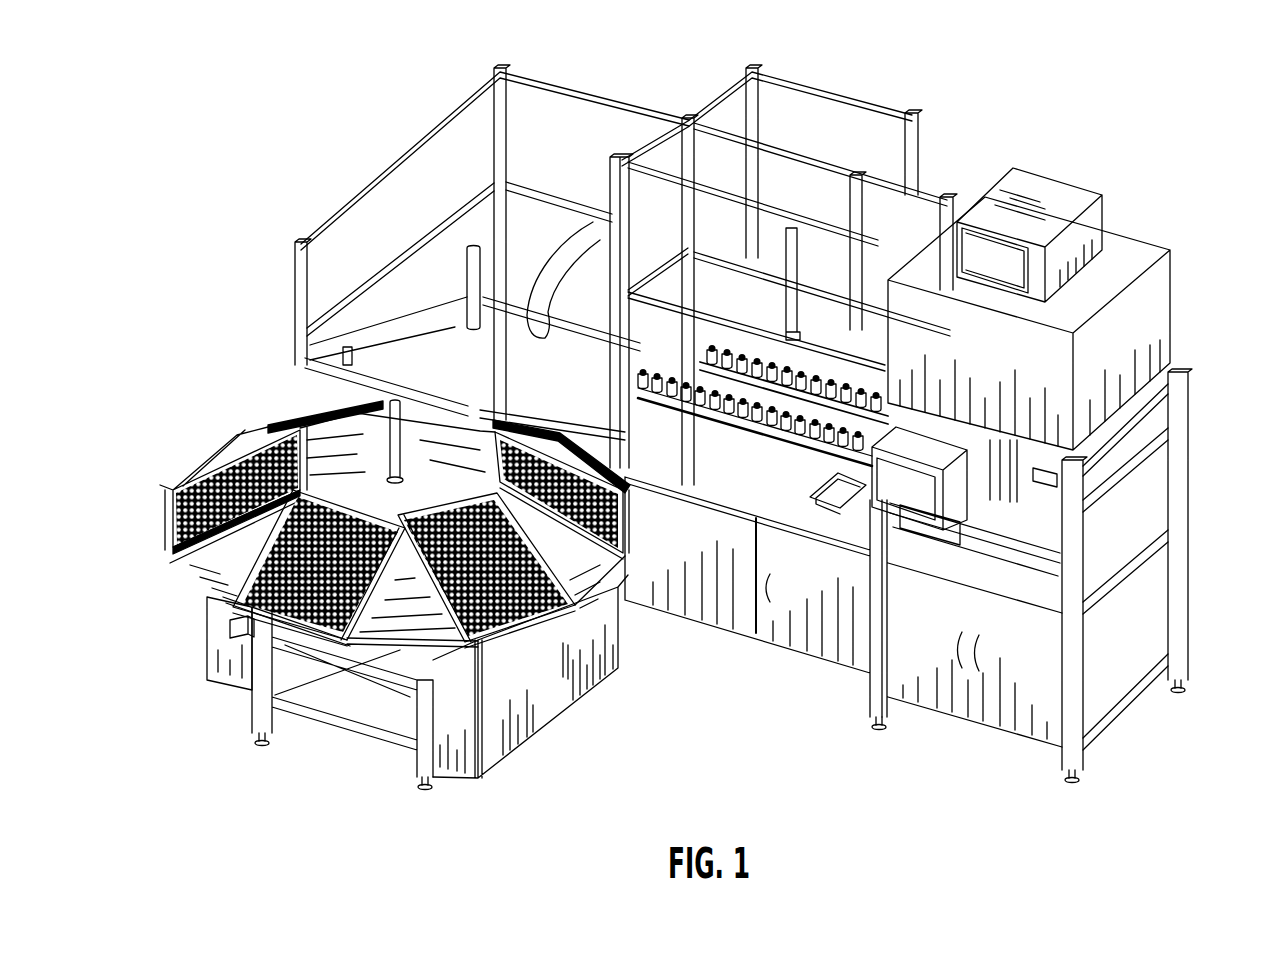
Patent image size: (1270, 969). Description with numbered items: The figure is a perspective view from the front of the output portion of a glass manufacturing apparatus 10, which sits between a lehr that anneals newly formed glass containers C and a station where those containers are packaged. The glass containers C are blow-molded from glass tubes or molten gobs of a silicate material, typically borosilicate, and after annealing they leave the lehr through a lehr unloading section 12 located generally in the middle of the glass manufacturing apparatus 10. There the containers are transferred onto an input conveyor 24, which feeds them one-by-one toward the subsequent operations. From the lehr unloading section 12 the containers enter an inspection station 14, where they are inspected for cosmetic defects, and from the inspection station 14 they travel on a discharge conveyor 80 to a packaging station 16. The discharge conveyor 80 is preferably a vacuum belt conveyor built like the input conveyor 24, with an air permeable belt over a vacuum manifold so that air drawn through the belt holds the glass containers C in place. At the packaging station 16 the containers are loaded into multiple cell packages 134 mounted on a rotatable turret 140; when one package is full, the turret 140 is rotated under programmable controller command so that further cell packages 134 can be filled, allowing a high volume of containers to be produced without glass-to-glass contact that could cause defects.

The glass manufacturing apparatus 10 is at (670, 408).
The lehr unloading section 12 is at (820, 84).
The inspection station 14 is at (1175, 291).
The packaging station 16 is at (320, 215).
The input conveyor 24 is at (722, 398).
The discharge conveyor 80 is at (758, 435).
The glass containers C is at (805, 418).
The cell packages 134 is at (188, 498).
The rotatable turret 140 is at (407, 635).